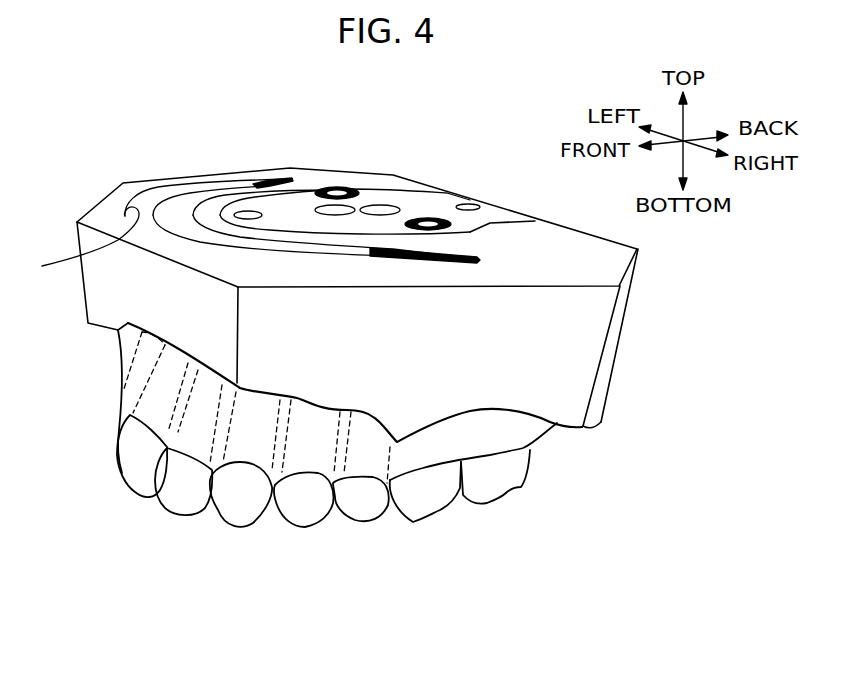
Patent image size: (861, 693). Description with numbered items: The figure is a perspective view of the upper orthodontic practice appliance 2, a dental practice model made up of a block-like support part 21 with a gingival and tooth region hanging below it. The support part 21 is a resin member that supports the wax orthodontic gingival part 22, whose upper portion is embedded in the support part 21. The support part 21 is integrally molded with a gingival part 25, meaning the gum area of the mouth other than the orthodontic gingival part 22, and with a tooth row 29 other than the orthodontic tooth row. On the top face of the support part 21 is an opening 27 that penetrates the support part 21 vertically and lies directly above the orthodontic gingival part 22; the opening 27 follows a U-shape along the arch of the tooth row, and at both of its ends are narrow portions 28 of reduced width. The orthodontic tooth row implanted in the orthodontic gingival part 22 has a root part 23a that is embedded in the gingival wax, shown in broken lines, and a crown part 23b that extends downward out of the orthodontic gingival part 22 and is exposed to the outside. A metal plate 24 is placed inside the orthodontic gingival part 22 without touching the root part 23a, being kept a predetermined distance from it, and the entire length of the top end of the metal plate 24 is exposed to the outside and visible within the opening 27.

The upper orthodontic practice appliance 2 is at (226, 582).
The support part 21 is at (582, 352).
The orthodontic gingival part 22 is at (252, 450).
The root part 23a is at (310, 450).
The crown part 23b is at (315, 508).
The metal plate 24 is at (187, 197).
The gingival part 25 is at (468, 442).
The opening 27 is at (76, 245).
The narrow portions 28 is at (470, 260).
The tooth row 29 is at (418, 507).